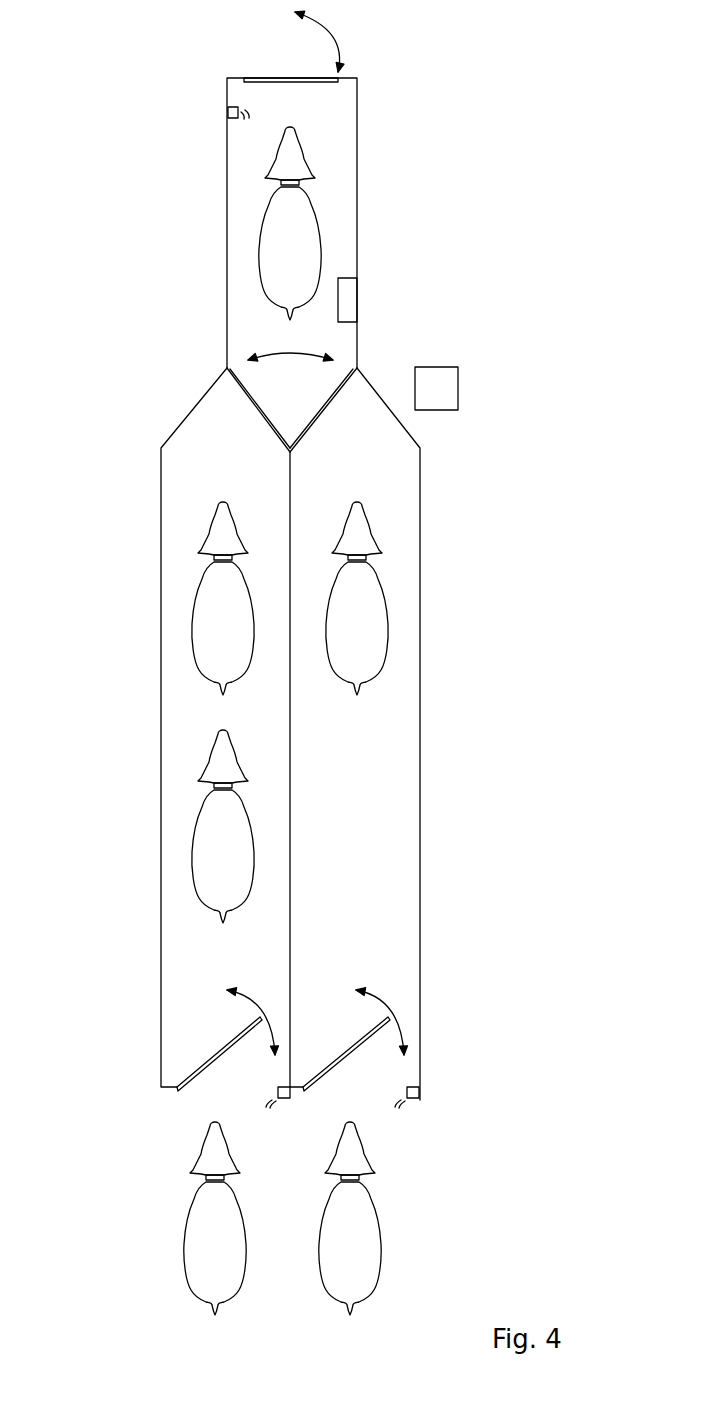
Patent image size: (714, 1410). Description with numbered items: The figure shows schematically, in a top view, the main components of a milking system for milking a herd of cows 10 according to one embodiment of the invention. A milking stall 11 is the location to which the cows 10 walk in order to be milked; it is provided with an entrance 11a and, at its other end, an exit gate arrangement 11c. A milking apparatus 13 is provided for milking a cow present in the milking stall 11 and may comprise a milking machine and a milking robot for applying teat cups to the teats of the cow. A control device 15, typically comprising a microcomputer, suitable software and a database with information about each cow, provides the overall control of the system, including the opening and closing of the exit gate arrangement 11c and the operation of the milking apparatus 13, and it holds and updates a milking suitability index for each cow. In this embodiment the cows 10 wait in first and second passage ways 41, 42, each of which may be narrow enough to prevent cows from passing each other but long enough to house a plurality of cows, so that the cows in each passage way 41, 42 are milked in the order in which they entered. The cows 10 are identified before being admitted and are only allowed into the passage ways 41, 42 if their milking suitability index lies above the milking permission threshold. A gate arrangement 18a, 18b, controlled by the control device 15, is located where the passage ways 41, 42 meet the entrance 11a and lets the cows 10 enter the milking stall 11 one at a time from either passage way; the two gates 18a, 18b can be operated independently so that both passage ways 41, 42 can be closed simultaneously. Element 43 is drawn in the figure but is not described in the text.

The cow 10 is at (267, 220).
The milking stall 11 is at (357, 170).
The entrance 11a is at (290, 373).
The exit gate arrangement 11c is at (257, 78).
The milking apparatus 13 is at (357, 295).
The control device 15 is at (458, 390).
The gate 18a is at (250, 405).
The gate 18b is at (330, 407).
The first passage way 41 is at (193, 975).
The second passage way 42 is at (327, 975).
The antenna / reader 43 is at (228, 108).